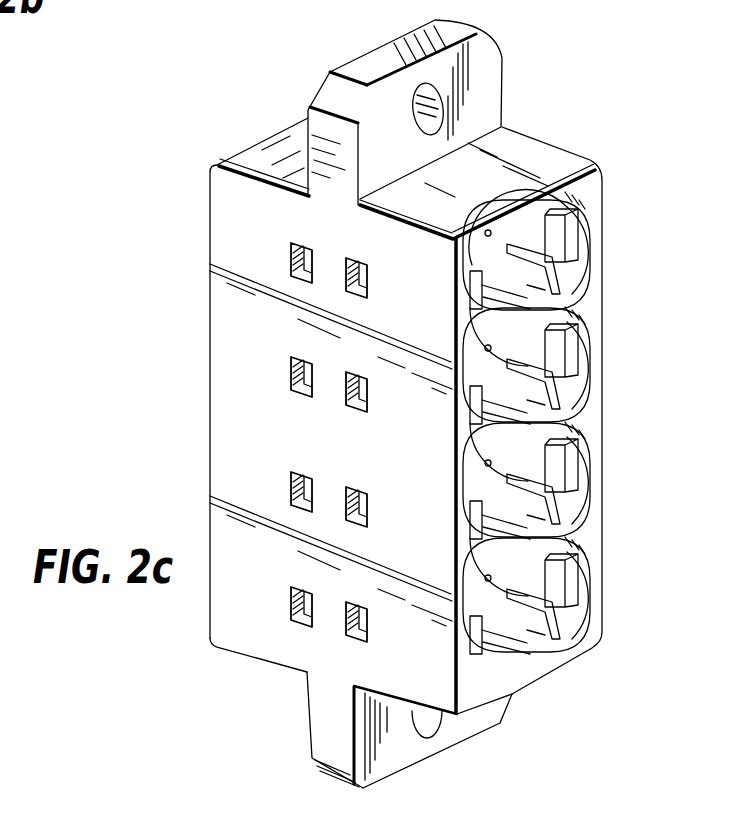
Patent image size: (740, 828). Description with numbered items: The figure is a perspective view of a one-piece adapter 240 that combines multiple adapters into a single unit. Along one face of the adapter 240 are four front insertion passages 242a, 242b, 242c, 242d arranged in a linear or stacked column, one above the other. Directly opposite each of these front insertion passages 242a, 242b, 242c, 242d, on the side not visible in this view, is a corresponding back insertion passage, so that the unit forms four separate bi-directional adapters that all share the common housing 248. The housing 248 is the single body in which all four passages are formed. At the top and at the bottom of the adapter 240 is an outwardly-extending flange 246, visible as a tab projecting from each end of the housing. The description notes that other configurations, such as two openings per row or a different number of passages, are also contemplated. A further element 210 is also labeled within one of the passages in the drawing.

The one-piece adapter 240 is at (271, 110).
The outwardly-extending flange 246 is at (457, 33).
The common housing 248 is at (210, 360).
The front insertion passage 242a is at (602, 240).
The front insertion passage 242b is at (602, 358).
The front insertion passage 242c is at (602, 474).
The front insertion passage 242d is at (568, 617).
The contact terminal 210 is at (520, 647).